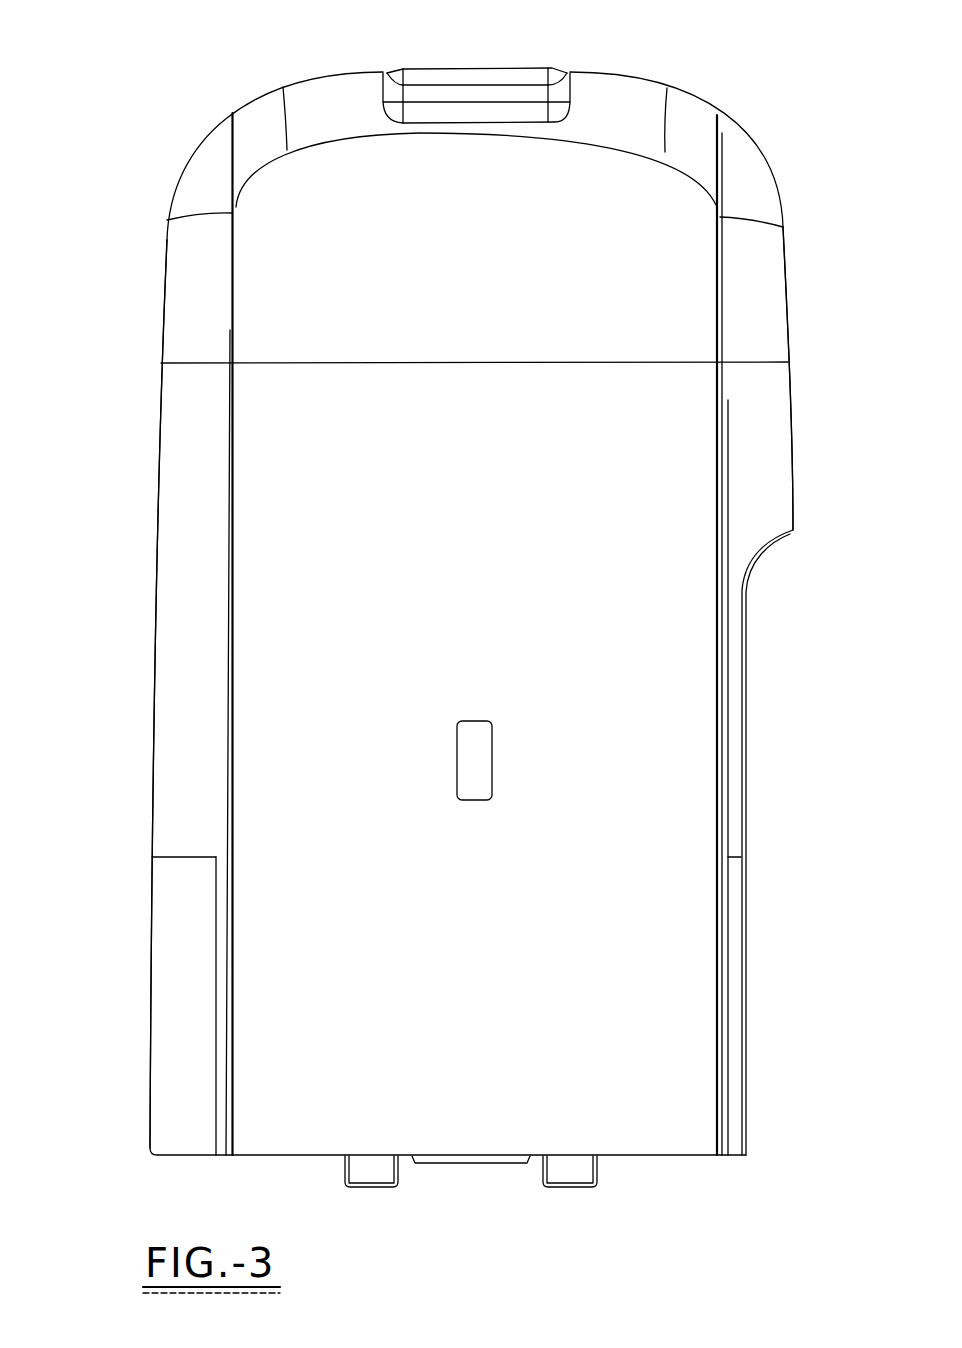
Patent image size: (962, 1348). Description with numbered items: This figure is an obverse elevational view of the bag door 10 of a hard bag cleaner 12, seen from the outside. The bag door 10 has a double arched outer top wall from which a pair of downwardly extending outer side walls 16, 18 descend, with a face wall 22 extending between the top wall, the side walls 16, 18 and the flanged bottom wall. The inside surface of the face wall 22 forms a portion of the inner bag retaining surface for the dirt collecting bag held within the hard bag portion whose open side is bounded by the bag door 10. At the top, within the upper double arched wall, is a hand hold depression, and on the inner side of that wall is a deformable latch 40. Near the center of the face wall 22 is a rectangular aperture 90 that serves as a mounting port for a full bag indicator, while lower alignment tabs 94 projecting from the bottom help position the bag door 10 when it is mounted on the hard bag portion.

The bag door 10 is at (752, 757).
The hard bag cleaner 12 is at (768, 57).
The outer side wall 16 is at (157, 480).
The outer side wall 18 is at (793, 478).
The face wall 22 is at (465, 605).
The deformable latch 40 is at (443, 92).
The rectangular aperture 90 is at (492, 742).
The lower alignment tab 94 is at (390, 1178).